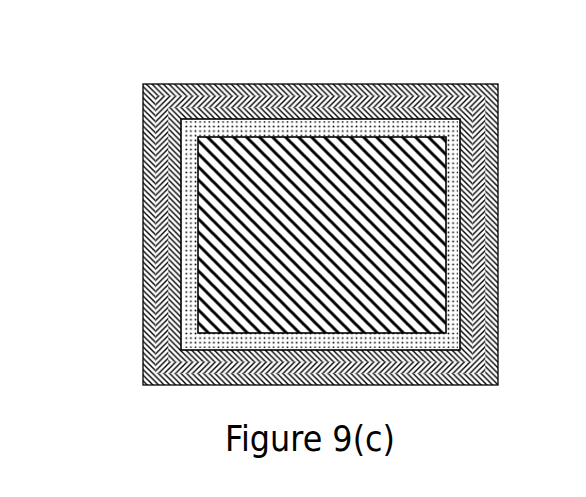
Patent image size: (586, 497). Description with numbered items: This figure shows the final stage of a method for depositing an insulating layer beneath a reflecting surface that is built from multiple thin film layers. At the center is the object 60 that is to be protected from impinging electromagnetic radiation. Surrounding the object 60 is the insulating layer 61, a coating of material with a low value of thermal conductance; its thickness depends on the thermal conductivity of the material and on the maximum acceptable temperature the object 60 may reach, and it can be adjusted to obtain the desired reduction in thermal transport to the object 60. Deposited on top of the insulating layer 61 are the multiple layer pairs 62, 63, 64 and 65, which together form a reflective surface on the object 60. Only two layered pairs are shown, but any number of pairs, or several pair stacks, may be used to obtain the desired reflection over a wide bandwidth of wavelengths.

The object 60 is at (290, 152).
The insulating layer 61 is at (450, 160).
The layer of first layered pair 62 is at (142, 177).
The layer of first layered pair 63 is at (143, 240).
The layer of second layered pair 64 is at (145, 282).
The layer of second layered pair 65 is at (145, 332).